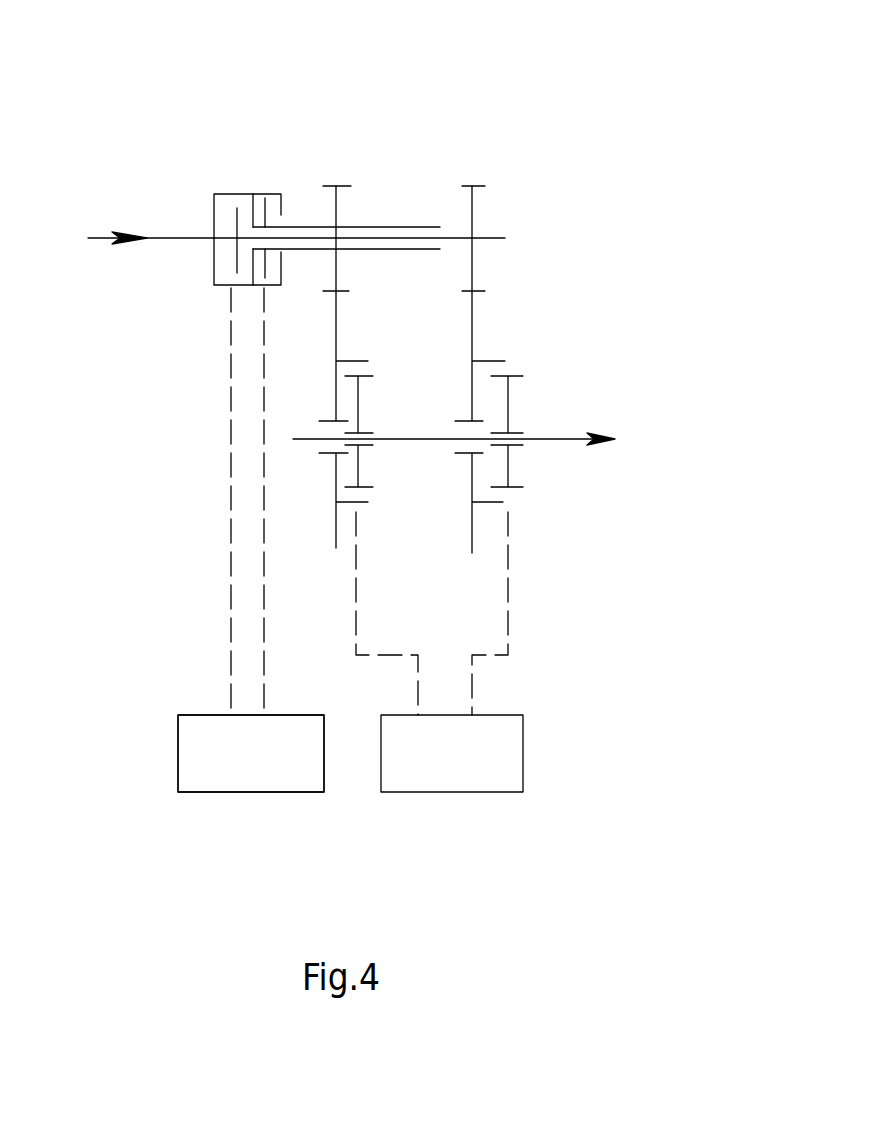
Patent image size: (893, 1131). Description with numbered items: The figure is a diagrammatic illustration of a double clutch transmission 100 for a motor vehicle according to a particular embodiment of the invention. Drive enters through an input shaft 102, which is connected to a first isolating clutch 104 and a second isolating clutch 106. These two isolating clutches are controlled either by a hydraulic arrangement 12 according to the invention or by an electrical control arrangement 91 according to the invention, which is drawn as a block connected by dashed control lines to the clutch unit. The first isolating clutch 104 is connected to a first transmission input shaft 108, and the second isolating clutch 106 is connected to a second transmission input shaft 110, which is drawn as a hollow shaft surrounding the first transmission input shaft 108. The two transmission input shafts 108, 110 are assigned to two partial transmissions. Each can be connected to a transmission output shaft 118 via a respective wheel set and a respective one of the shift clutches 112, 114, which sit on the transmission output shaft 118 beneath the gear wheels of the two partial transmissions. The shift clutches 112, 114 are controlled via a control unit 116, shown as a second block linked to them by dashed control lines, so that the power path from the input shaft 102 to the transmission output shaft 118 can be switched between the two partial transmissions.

The double clutch transmission 100 is at (573, 135).
The input shaft 102 is at (98, 235).
The first isolating clutch 104 is at (235, 262).
The second isolating clutch 106 is at (267, 273).
The first transmission input shaft 108 is at (490, 238).
The second transmission input shaft 110 is at (372, 227).
The shift clutch 112 is at (515, 450).
The shift clutch 114 is at (365, 453).
The control unit 116 is at (452, 792).
The transmission output shaft 118 is at (545, 437).
The hydraulic arrangement 12 is at (238, 792).
The electrical control arrangement 91 is at (251, 753).